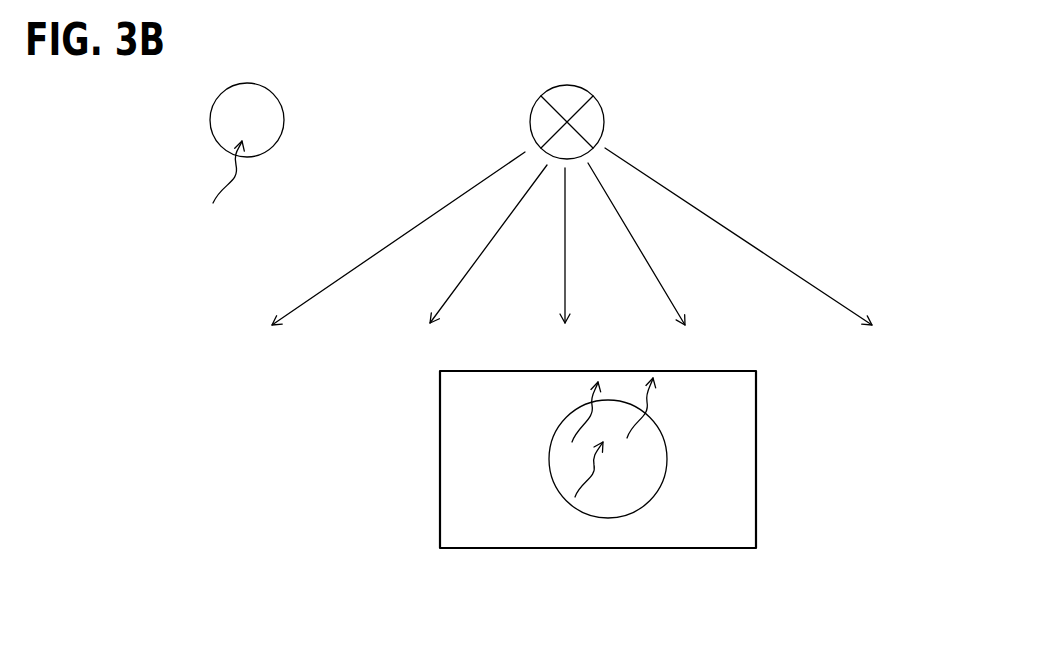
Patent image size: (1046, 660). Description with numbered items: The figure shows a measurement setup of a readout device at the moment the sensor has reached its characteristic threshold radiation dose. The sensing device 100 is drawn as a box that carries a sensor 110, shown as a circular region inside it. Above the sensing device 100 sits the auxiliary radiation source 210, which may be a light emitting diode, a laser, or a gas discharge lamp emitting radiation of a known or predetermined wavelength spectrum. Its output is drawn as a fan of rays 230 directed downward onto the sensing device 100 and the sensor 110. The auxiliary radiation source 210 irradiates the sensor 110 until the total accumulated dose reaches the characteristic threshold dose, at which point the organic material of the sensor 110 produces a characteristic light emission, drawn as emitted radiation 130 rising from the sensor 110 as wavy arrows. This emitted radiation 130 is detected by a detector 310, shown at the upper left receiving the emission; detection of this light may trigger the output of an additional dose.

The sensing device 100 is at (442, 398).
The sensor 110 is at (553, 458).
The emitted radiation 130 is at (588, 398).
The auxiliary radiation source 210 is at (598, 115).
The light rays 230 is at (810, 240).
The detector 310 is at (270, 102).